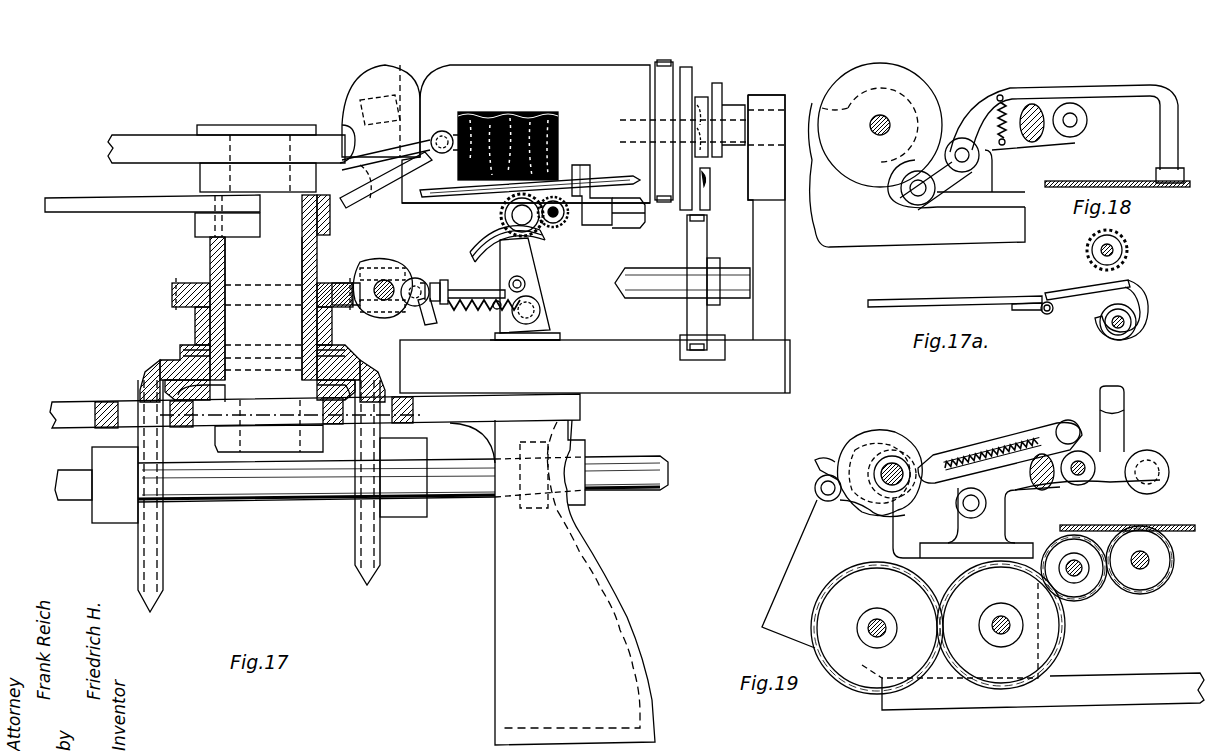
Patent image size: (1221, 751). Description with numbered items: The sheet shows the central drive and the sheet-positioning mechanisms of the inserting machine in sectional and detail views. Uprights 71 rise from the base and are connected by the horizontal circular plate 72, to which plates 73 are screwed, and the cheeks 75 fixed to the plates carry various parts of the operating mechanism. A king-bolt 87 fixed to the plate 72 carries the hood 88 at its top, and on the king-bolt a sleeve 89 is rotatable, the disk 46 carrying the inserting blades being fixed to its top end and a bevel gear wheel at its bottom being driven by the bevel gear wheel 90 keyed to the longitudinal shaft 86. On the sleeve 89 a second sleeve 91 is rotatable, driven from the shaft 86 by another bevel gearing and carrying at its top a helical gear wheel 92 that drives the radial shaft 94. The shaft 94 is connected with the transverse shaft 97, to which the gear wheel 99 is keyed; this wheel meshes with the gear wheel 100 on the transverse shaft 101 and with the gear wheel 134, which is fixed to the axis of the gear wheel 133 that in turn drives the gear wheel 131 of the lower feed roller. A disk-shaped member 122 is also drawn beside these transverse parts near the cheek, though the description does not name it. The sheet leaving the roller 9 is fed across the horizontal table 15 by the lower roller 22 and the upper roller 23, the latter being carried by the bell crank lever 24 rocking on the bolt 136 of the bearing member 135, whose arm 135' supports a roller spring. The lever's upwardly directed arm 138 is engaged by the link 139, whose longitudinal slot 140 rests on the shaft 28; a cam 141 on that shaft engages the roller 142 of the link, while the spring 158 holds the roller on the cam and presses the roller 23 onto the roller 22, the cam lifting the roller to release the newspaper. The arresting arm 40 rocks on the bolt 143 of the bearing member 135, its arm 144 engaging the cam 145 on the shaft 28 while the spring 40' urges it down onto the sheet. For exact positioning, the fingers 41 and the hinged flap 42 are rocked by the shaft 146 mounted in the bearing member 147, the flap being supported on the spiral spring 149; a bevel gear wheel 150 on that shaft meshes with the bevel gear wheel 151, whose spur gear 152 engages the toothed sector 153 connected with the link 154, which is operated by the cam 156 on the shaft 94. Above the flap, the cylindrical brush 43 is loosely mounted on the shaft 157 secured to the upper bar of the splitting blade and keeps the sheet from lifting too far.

In FIG. 17, the roller 9 is at (555, 72).
In FIG. 18, the horizontal table 15 is at (1184, 187).
In FIG. 17A, the horizontal table 15 is at (936, 300).
In FIG. 19, the horizontal table 15 is at (1188, 525).
In FIG. 19, the lower feed roller 22 is at (1150, 588).
In FIG. 19, the upper feed roller 23 is at (1148, 452).
In FIG. 19, the bell crank lever 24 is at (1120, 498).
In FIG. 17, the shaft 28 is at (785, 120).
In FIG. 18, the shaft 28 is at (870, 124).
In FIG. 19, the shaft 28 is at (898, 458).
In FIG. 18, the arresting arm 40 is at (1067, 134).
In FIG. 18, the spring 40' is at (1016, 99).
In FIG. 17, the positioning fingers 41 is at (584, 170).
In FIG. 17, the hinged flap 42 is at (485, 198).
In FIG. 17A, the hinged flap 42 is at (1092, 300).
In FIG. 17, the cylindrical brush 43 is at (520, 112).
In FIG. 17A, the cylindrical brush 43 is at (1090, 262).
In FIG. 17, the disk 46 is at (98, 212).
In FIG. 17, the uprights 71 is at (552, 582).
In FIG. 17, the horizontal circular plate 72 is at (582, 410).
In FIG. 17, the plate 73 is at (716, 393).
In FIG. 17, the cheek 75 is at (786, 316).
In FIG. 19, the cheek 75 is at (785, 573).
In FIG. 17, the shaft 86 is at (640, 486).
In FIG. 17, the king-bolt 87 is at (262, 445).
In FIG. 17, the hood 88 is at (128, 140).
In FIG. 17, the sleeve 89 is at (210, 252).
In FIG. 17, the bevel gear wheel 90 is at (357, 555).
In FIG. 17, the sleeve 91 is at (195, 323).
In FIG. 17, the helical gear wheel 92 is at (172, 290).
In FIG. 17, the radial shaft 94 is at (384, 300).
In FIG. 19, the transverse shaft 97 is at (998, 636).
In FIG. 19, the gear wheel 99 is at (1062, 668).
In FIG. 17, the gear wheel 100 is at (700, 235).
In FIG. 19, the gear wheel 100 is at (905, 688).
In FIG. 17, the transverse shaft 101 is at (656, 288).
In FIG. 19, the transverse shaft 101 is at (877, 618).
In FIG. 17, the disc 122 is at (665, 60).
In FIG. 19, the gear wheel 131 is at (1162, 587).
In FIG. 19, the gear wheel 133 is at (1095, 593).
In FIG. 19, the gear wheel 134 is at (1098, 597).
In FIG. 18, the bearing member 135 is at (1030, 148).
In FIG. 19, the bearing member 135 is at (1041, 489).
In FIG. 19, the arm of bearing member 135' is at (1137, 416).
In FIG. 18, the bolt 136 is at (1071, 128).
In FIG. 19, the bolt 136 is at (1080, 478).
In FIG. 19, the upwardly directed arm 138 is at (1080, 425).
In FIG. 17, the link 139 is at (701, 97).
In FIG. 19, the link 139 is at (940, 452).
In FIG. 19, the longitudinal slot 140 is at (862, 460).
In FIG. 17, the cam 141 is at (720, 83).
In FIG. 19, the cam 141 is at (885, 520).
In FIG. 19, the roller 142 is at (815, 497).
In FIG. 18, the bolt 143 is at (963, 172).
In FIG. 17, the arm 144 is at (708, 186).
In FIG. 18, the arm 144 is at (930, 190).
In FIG. 17, the cam 145 is at (686, 67).
In FIG. 18, the cam 145 is at (852, 175).
In FIG. 17, the shaft 146 is at (612, 212).
In FIG. 17, the bearing member 147 is at (545, 272).
In FIG. 17A, the spiral spring 149 is at (1135, 298).
In FIG. 17, the bevel gear wheel 150 is at (560, 224).
In FIG. 17, the bevel gear wheel 151 is at (500, 222).
In FIG. 17, the spur gear 152 is at (545, 238).
In FIG. 17, the toothed sector 153 is at (528, 283).
In FIG. 17, the link 154 is at (470, 318).
In FIG. 17, the cam 156 is at (358, 280).
In FIG. 17, the shaft 157 is at (446, 130).
In FIG. 19, the spring 158 is at (1000, 442).